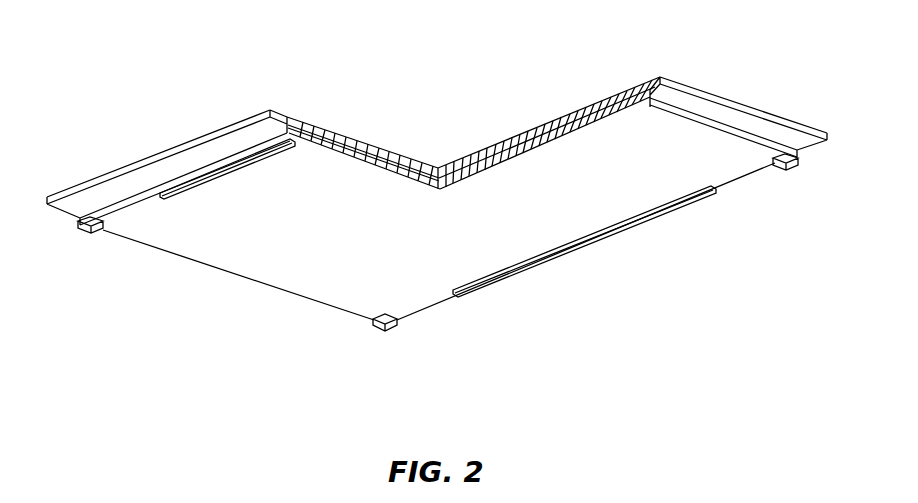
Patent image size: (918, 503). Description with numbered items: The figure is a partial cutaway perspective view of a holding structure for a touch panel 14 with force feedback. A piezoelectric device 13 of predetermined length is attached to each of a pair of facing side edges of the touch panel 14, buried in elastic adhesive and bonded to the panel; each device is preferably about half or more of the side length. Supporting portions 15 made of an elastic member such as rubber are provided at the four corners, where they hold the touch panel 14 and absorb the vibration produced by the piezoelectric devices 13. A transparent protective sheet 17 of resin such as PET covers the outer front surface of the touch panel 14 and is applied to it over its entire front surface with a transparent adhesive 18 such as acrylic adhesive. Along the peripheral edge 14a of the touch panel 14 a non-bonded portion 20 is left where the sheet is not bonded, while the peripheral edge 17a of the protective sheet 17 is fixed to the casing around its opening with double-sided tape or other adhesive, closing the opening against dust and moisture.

The piezoelectric device 13 is at (187, 192).
The touch panel 14 is at (423, 250).
The peripheral edge of the touch panel 14a is at (730, 127).
The supporting portion 15 is at (82, 234).
The transparent protective sheet 17 is at (377, 143).
The peripheral edge of the protective sheet 17a is at (765, 128).
The transparent adhesive 18 is at (553, 120).
The non-bonded portion 20 is at (281, 109).